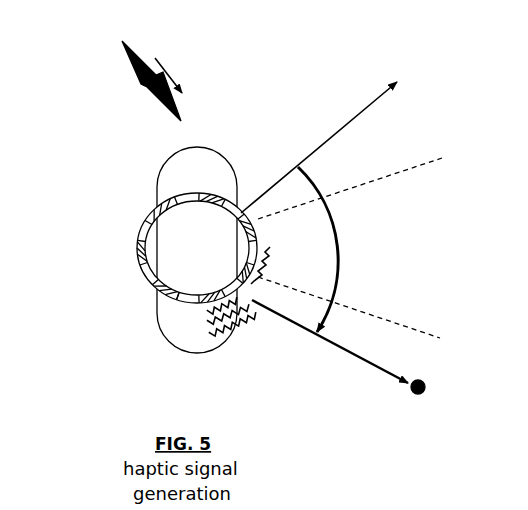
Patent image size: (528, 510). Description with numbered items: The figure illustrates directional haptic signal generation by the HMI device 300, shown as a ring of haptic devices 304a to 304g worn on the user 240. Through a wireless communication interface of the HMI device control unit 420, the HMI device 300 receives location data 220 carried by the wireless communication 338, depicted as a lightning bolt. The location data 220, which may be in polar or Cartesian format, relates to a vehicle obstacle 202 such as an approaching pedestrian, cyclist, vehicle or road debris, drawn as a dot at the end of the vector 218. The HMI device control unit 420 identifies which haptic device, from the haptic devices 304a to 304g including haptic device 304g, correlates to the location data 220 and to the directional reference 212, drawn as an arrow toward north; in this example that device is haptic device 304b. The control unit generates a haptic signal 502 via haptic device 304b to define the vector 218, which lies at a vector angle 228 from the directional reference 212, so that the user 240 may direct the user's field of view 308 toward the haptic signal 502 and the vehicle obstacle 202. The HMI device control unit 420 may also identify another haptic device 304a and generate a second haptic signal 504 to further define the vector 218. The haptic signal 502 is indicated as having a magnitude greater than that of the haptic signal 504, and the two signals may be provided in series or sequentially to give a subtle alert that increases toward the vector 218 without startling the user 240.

The vehicle obstacle 202 is at (418, 398).
The directional reference 212 is at (373, 97).
The vector 218 is at (380, 374).
The location data 220 is at (173, 79).
The vector angle 228 is at (322, 192).
The user 240 is at (150, 326).
The HMI device 300 is at (133, 230).
The haptic device 304a is at (229, 242).
The haptic device 304b is at (198, 287).
The haptic device 304g is at (214, 214).
The field of view 308 is at (353, 248).
The wireless communication 338 is at (128, 103).
The HMI device control unit 420 is at (168, 192).
The haptic signal 502 is at (235, 340).
The haptic signal 504 is at (275, 263).